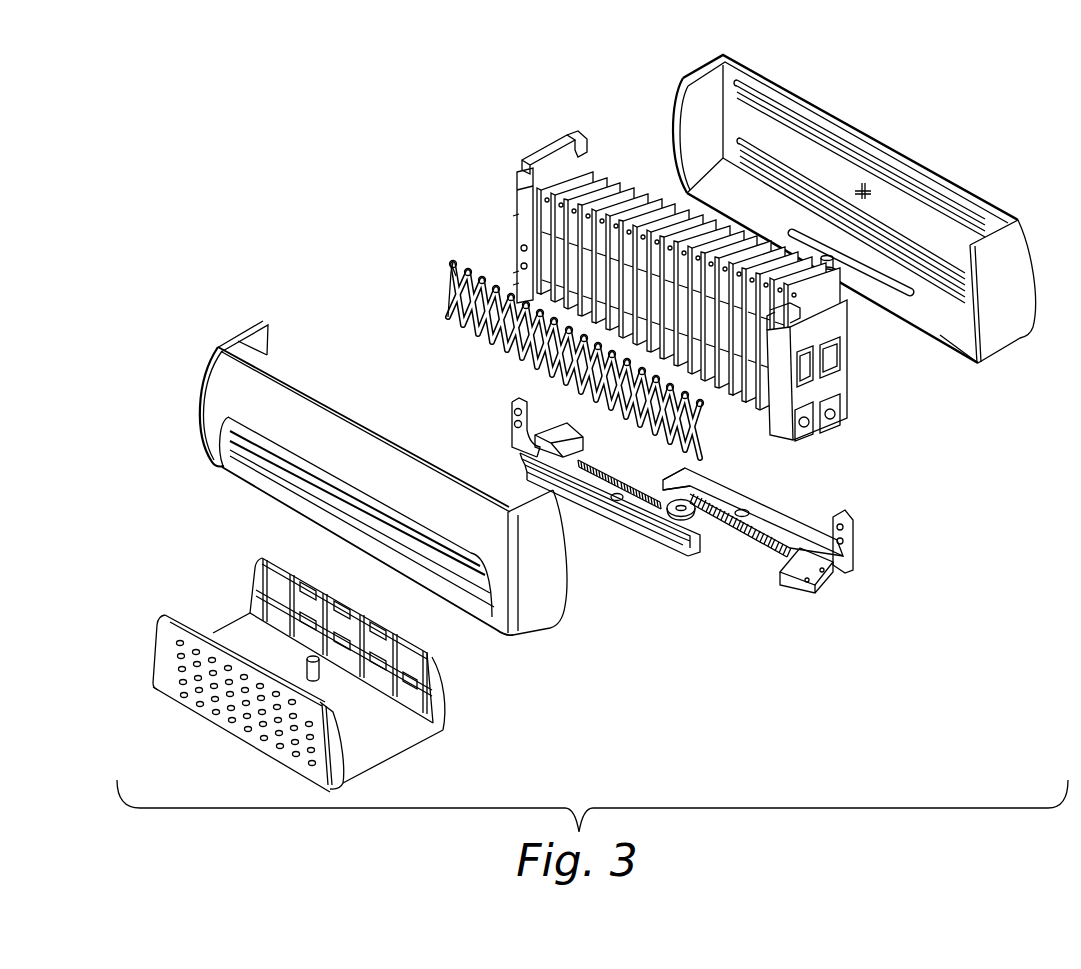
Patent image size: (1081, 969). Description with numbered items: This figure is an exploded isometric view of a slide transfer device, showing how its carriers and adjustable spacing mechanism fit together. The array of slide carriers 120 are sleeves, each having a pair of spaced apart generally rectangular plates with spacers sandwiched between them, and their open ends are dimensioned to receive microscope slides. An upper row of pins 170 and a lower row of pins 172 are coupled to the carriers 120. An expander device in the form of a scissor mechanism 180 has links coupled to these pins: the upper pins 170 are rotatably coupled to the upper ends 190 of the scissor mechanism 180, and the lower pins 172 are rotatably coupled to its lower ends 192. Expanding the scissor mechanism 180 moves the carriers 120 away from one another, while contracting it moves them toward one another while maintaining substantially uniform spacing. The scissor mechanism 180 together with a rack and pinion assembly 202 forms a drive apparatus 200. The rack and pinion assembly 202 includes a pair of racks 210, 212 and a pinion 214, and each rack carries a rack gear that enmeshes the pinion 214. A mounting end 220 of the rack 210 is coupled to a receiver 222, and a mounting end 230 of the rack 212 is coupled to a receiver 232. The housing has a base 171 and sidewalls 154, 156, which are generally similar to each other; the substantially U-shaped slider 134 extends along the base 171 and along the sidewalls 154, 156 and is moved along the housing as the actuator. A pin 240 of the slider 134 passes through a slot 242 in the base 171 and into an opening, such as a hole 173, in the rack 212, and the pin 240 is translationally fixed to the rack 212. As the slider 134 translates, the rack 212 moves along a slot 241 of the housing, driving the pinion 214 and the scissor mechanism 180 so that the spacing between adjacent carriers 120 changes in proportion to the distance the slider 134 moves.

The slide carriers 120 is at (623, 160).
The slider 134 is at (230, 730).
The sidewall 154 is at (543, 595).
The sidewall 156 is at (977, 207).
The upper row of pins 170 is at (515, 215).
The base 171 is at (957, 342).
The lower row of pins 172 is at (513, 273).
The hole 173 is at (740, 513).
The scissor mechanism 180 is at (410, 287).
The upper ends 190 is at (438, 258).
The lower ends 192 is at (437, 317).
The drive apparatus 200 is at (893, 560).
The rack and pinion assembly 202 is at (721, 555).
The rack 210 is at (640, 533).
The rack 212 is at (800, 520).
The pinion 214 is at (697, 503).
The mounting end 220 is at (547, 423).
The receiver 222 is at (553, 147).
The mounting end 230 is at (790, 587).
The receiver 232 is at (850, 410).
The pin 240 is at (323, 667).
The slot 241 is at (951, 308).
The slot 242 is at (887, 290).